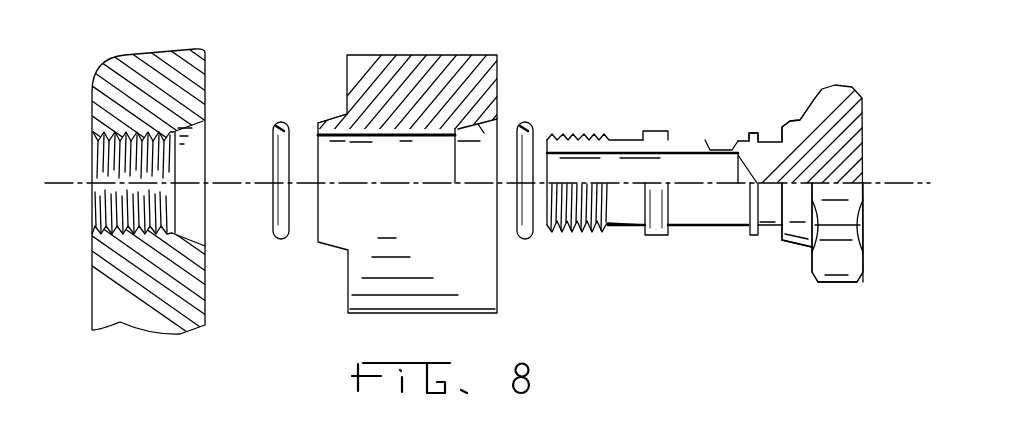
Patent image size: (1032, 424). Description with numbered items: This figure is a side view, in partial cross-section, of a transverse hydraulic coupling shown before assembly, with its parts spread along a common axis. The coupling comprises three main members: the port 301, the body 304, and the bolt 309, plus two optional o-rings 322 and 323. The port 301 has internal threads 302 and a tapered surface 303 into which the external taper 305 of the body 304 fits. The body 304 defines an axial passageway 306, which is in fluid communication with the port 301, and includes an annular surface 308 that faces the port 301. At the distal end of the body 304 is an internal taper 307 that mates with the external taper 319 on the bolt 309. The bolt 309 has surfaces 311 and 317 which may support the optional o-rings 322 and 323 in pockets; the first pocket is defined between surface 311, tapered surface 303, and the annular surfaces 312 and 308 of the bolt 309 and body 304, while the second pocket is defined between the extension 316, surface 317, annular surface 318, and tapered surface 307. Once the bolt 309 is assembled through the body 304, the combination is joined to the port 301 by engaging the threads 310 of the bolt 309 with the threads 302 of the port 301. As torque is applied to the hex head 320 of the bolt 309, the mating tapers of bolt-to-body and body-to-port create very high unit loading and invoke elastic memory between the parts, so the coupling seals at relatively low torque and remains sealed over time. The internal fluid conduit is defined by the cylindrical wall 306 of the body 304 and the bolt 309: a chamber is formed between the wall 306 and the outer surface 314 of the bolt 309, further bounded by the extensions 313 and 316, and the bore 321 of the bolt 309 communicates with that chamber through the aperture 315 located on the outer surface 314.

The port 301 is at (148, 52).
The internal threads 302 is at (95, 146).
The tapered surface 303 is at (204, 125).
The body 304 is at (386, 316).
The external taper 305 is at (345, 116).
The axial passageway 306 is at (400, 142).
The internal taper 307 is at (497, 126).
The annular surface 308 is at (317, 124).
The bolt 309 is at (744, 268).
The threads 310 is at (578, 135).
The surface 311 is at (628, 226).
The annular surface 312 is at (650, 133).
The extension 313 is at (656, 236).
The outer surface 314 is at (690, 140).
The aperture 315 is at (727, 142).
The extension 316 is at (750, 232).
The surface 317 is at (773, 236).
The annular surface 318 is at (784, 124).
The external taper 319 is at (800, 250).
The hex head 320 is at (850, 262).
The bore 321 is at (652, 154).
The o-ring 322 is at (276, 240).
The o-ring 323 is at (524, 240).